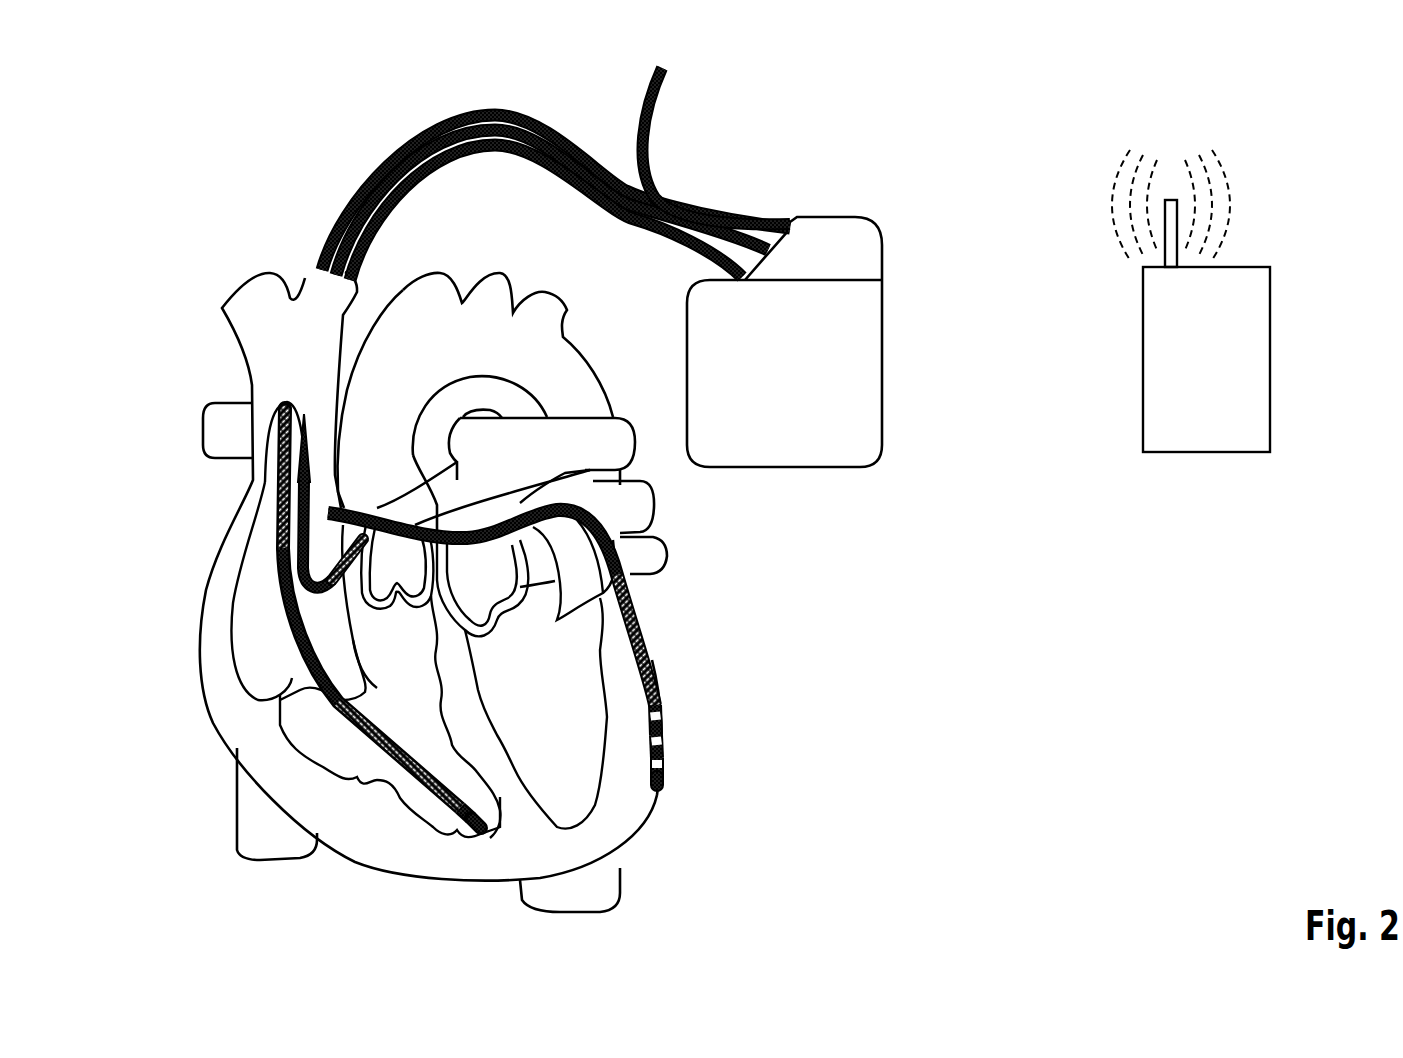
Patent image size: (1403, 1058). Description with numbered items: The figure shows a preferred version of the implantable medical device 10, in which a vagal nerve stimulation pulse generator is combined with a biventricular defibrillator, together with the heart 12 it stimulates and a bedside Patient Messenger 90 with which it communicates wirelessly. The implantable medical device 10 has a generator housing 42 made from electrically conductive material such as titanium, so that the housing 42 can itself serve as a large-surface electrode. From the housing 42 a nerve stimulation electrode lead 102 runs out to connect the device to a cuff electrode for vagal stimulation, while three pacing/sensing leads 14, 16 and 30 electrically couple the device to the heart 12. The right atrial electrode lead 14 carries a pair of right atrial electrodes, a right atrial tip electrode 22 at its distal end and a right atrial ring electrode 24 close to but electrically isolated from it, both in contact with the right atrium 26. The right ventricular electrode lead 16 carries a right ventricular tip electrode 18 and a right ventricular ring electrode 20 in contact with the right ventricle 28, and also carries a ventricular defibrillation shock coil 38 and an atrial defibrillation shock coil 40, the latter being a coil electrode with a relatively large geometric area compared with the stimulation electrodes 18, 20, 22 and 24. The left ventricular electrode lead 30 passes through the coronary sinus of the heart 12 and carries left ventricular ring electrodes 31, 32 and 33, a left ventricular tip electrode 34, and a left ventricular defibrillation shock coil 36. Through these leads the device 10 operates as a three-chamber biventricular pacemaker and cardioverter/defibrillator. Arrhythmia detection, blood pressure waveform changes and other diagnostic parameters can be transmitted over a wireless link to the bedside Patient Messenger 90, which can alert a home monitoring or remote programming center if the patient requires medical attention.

The implantable medical device 10 is at (630, 320).
The heart 12 is at (409, 601).
The right atrial electrode lead 14 is at (538, 136).
The right ventricular electrode lead 16 is at (492, 110).
The right ventricular tip electrode 18 is at (478, 830).
The right ventricular ring electrode 20 is at (457, 818).
The right atrial tip electrode 22 is at (368, 522).
The right atrial ring electrode 24 is at (330, 593).
The right atrium 26 is at (243, 650).
The right ventricle 28 is at (343, 770).
The left ventricular electrode lead 30 is at (490, 152).
The left ventricular ring electrode 31 is at (665, 765).
The left ventricular ring electrode 32 is at (663, 740).
The left ventricular ring electrode 33 is at (663, 714).
The left ventricular tip electrode 34 is at (664, 786).
The left ventricular defibrillation shock coil 36 is at (642, 634).
The ventricular defibrillation shock coil 38 is at (357, 726).
The atrial defibrillation shock coil 40 is at (277, 471).
The generator housing 42 is at (785, 468).
The bedside Patient Messenger 90 is at (1277, 468).
The nerve stimulation electrode lead 102 is at (660, 100).